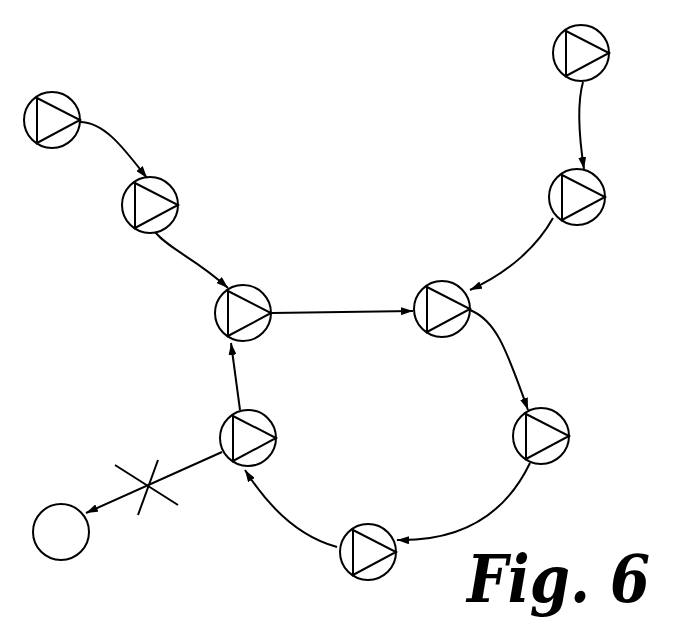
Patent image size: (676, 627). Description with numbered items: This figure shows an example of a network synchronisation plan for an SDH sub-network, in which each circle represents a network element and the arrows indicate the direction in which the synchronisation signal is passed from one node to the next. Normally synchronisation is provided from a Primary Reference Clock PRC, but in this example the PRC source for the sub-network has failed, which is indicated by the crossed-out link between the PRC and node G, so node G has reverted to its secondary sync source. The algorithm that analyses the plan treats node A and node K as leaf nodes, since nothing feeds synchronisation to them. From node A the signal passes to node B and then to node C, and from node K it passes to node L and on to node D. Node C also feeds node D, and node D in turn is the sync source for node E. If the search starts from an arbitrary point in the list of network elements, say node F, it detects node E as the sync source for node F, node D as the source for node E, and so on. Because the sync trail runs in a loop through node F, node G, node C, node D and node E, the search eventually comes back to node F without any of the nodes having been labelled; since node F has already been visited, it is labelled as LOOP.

The node A is at (52, 103).
The node B is at (157, 194).
The node C is at (243, 296).
The node D is at (442, 289).
The node E is at (547, 420).
The node F is at (378, 554).
The node G is at (234, 433).
The node K is at (569, 48).
The node L is at (565, 193).
The Primary Reference Clock PRC is at (61, 532).